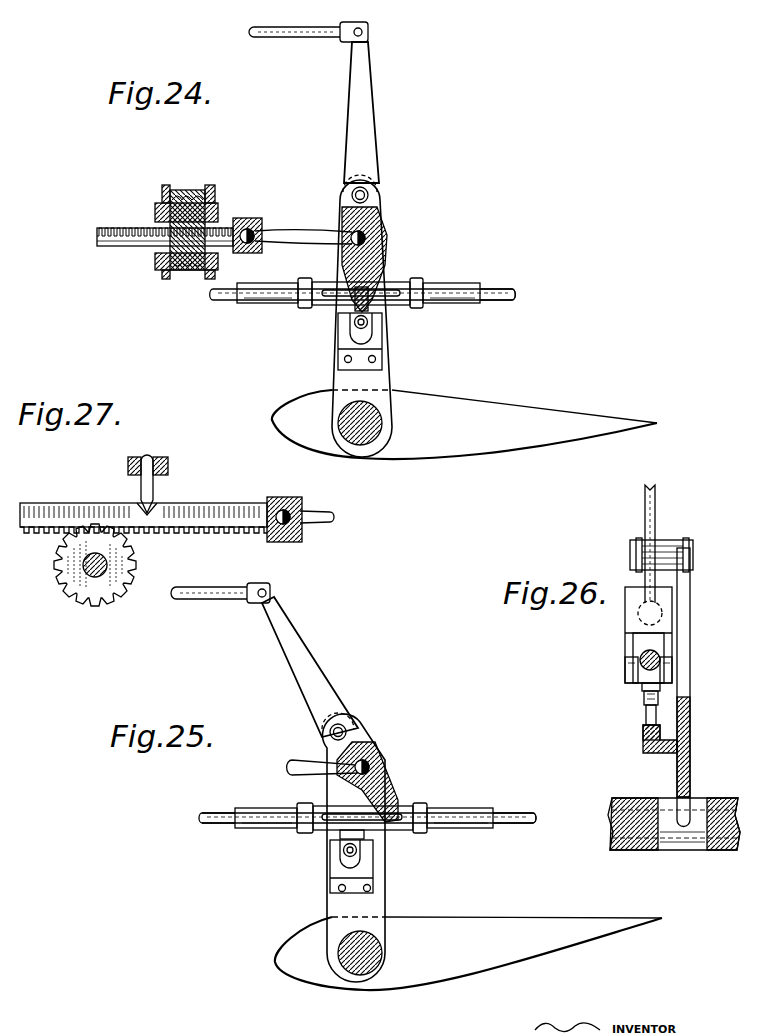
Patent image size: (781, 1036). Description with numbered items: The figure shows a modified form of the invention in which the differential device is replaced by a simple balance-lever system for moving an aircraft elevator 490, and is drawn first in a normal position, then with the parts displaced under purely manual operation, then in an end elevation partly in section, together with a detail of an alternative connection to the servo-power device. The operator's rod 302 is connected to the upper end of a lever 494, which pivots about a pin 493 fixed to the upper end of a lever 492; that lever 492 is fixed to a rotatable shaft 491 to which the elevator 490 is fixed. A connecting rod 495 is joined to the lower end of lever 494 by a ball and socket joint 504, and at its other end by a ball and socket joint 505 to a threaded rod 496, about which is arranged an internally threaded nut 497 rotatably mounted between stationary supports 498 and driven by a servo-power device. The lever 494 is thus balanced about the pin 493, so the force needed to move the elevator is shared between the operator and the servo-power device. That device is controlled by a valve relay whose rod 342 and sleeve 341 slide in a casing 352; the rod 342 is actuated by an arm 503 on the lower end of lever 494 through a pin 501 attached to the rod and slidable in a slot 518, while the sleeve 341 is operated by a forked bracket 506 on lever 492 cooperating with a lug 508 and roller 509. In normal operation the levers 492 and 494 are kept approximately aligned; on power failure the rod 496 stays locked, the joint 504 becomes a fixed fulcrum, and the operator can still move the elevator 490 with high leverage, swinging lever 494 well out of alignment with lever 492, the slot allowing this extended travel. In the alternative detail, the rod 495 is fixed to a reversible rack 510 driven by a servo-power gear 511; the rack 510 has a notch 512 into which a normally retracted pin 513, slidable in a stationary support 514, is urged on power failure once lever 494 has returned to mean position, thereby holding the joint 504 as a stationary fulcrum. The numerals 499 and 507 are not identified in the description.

In FIG. 24, the rod 302 is at (306, 39).
In FIG. 25, the rod 302 is at (226, 600).
In FIG. 24, the sleeve 341 is at (457, 300).
In FIG. 25, the sleeve 341 is at (476, 811).
In FIG. 26, the sleeve 341 is at (638, 660).
In FIG. 24, the rod 342 is at (498, 291).
In FIG. 25, the rod 342 is at (224, 813).
In FIG. 26, the rod 342 is at (640, 681).
In FIG. 24, the casing 352 is at (441, 286).
In FIG. 25, the casing 352 is at (424, 806).
In FIG. 24, the elevator 490 is at (500, 428).
In FIG. 25, the elevator 490 is at (468, 958).
In FIG. 26, the elevator 490 is at (710, 848).
In FIG. 24, the rotatable shaft 491 is at (370, 449).
In FIG. 25, the rotatable shaft 491 is at (358, 972).
In FIG. 24, the lever 492 is at (378, 379).
In FIG. 25, the lever 492 is at (378, 907).
In FIG. 26, the lever 492 is at (686, 690).
In FIG. 24, the pin 493 is at (367, 193).
In FIG. 26, the pin 493 is at (690, 556).
In FIG. 24, the lever 494 is at (362, 116).
In FIG. 25, the lever 494 is at (292, 641).
In FIG. 26, the lever 494 is at (661, 506).
In FIG. 24, the connecting rod 495 is at (300, 237).
In FIG. 27, the connecting rod 495 is at (311, 524).
In FIG. 24, the threaded rod 496 is at (116, 246).
In FIG. 24, the internally threaded nut 497 is at (185, 200).
In FIG. 24, the stationary supports 498 is at (160, 205).
In FIG. 26, the bearing block 499 is at (618, 734).
In FIG. 24, the pin 501 is at (345, 286).
In FIG. 25, the pin 501 is at (382, 824).
In FIG. 26, the pin 501 is at (661, 656).
In FIG. 24, the arm 503 is at (382, 271).
In FIG. 25, the arm 503 is at (395, 786).
In FIG. 24, the ball and socket joint 504 is at (383, 222).
In FIG. 24, the ball and socket joint 505 is at (247, 219).
In FIG. 27, the ball and socket joint 505 is at (276, 497).
In FIG. 24, the forked bracket 506 is at (382, 346).
In FIG. 25, the forked bracket 506 is at (337, 881).
In FIG. 26, the forked bracket 506 is at (648, 745).
In FIG. 24, the pin 507 is at (376, 326).
In FIG. 26, the pin 507 is at (665, 636).
In FIG. 25, the lug 508 is at (343, 841).
In FIG. 26, the lug 508 is at (641, 700).
In FIG. 25, the roller 509 is at (343, 857).
In FIG. 26, the roller 509 is at (660, 716).
In FIG. 27, the reversible rack 510 is at (206, 507).
In FIG. 27, the servo-power driven gear 511 is at (118, 569).
In FIG. 27, the notch 512 is at (152, 510).
In FIG. 27, the pin 513 is at (145, 484).
In FIG. 27, the stationary support 514 is at (128, 461).
In FIG. 24, the slot 518 is at (348, 315).